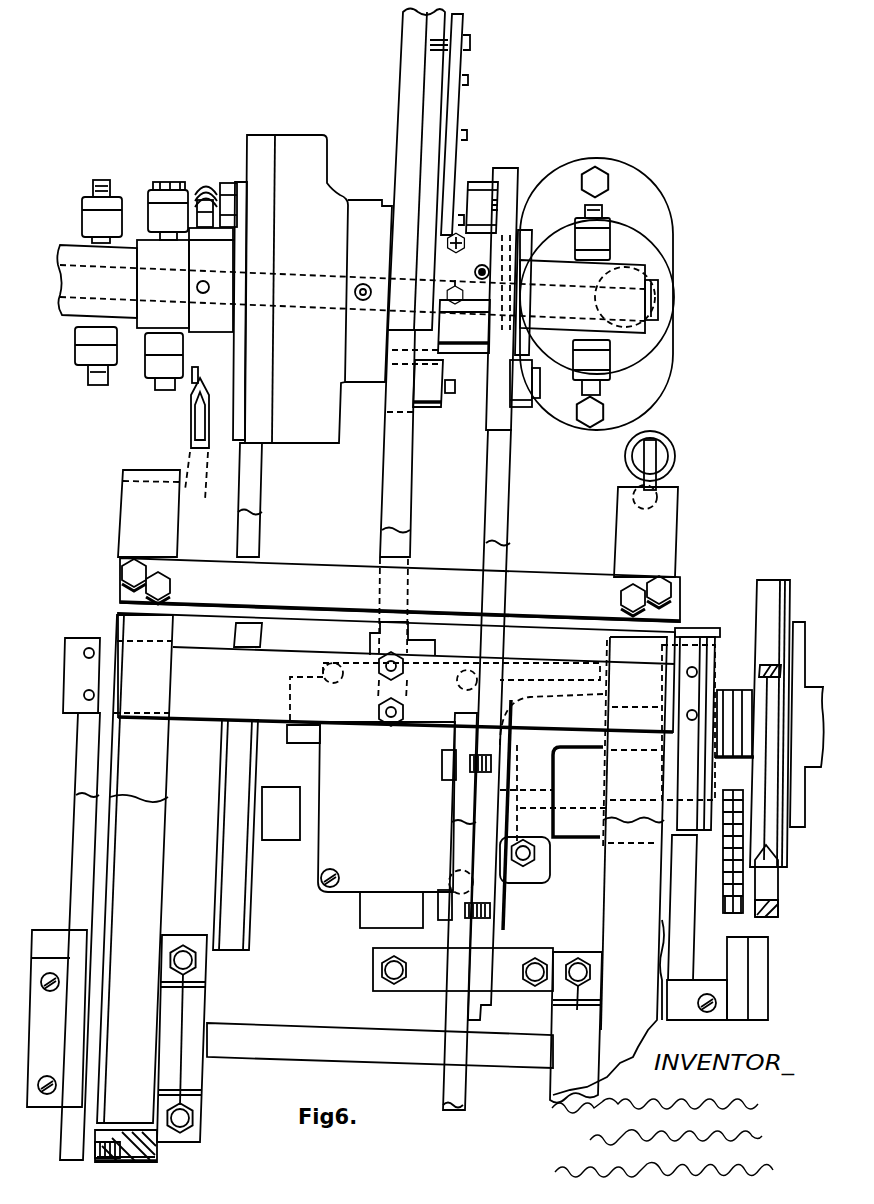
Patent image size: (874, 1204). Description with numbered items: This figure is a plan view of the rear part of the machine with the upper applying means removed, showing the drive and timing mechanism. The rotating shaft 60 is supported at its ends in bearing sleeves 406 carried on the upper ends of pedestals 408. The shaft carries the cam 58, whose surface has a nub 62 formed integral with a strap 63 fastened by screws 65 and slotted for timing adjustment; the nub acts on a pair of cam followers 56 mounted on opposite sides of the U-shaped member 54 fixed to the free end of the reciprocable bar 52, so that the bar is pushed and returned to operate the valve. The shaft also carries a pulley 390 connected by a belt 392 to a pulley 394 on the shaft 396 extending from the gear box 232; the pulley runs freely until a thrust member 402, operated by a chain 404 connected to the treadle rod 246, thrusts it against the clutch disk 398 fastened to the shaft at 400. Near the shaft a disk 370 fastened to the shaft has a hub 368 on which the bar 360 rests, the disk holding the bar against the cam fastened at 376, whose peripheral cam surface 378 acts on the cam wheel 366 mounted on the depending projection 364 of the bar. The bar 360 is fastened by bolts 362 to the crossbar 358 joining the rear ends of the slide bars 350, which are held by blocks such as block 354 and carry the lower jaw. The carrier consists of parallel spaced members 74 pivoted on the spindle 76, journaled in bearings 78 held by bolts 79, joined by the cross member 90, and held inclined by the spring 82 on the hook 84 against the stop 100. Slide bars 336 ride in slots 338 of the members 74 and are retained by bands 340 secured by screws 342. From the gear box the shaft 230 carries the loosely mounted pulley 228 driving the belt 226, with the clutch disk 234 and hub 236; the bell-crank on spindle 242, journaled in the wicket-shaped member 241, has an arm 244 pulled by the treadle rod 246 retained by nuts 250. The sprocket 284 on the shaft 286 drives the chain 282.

The reciprocable bar 52 is at (491, 522).
The U-shaped member 54 is at (503, 407).
The cam followers 56 is at (486, 182).
The cam 58 is at (527, 240).
The rotating shaft 60 is at (660, 302).
The nub 62 is at (472, 340).
The strap 63 is at (446, 252).
The screws 65 is at (455, 288).
The spaced members 74 is at (177, 540).
The spindle 76 is at (305, 1036).
The bearings 78 is at (203, 1013).
The bolts 79 is at (381, 1038).
The spring 82 is at (672, 452).
The hook 84 is at (669, 469).
The cross member 90 is at (318, 572).
The stop 100 is at (633, 491).
The belt 226 is at (776, 897).
The pulley 228 is at (800, 578).
The shaft 230 is at (511, 888).
The gear box 232 is at (350, 886).
The clutch disk 234 is at (798, 636).
The hub 236 is at (752, 693).
The wicket-shaped member 241 is at (713, 648).
The spindle 242 is at (700, 621).
The arm 244 is at (548, 776).
The treadle rod 246 is at (522, 870).
The nuts 250 is at (538, 860).
The chain 282 is at (740, 905).
The sprocket 284 is at (728, 850).
The shaft 286 is at (600, 838).
The slide bars 336 is at (115, 1140).
The slots 338 is at (122, 1150).
The bands 340 is at (157, 1157).
The screws 342 is at (95, 1147).
The slide bars 350 is at (80, 775).
The block 354 is at (678, 990).
The crossbar 358 is at (396, 672).
The bar 360 is at (388, 432).
The bolts 362 is at (384, 673).
The depending projection 364 is at (388, 408).
The cam wheel 366 is at (436, 403).
The hub 368 is at (395, 354).
The disk 370 is at (390, 205).
The fastening of cam to shaft 376 is at (490, 272).
The peripheral cam surface 378 is at (430, 92).
The pulley 390 is at (245, 152).
The belt 392 is at (262, 480).
The pulley 394 is at (220, 810).
The shaft 396 is at (277, 837).
The clutch disk 398 is at (300, 140).
The fastening of clutch disk 400 is at (364, 283).
The thrust member 402 is at (203, 174).
The chain 404 is at (192, 429).
The bearing sleeves 406 is at (77, 246).
The pedestals 408 is at (627, 237).